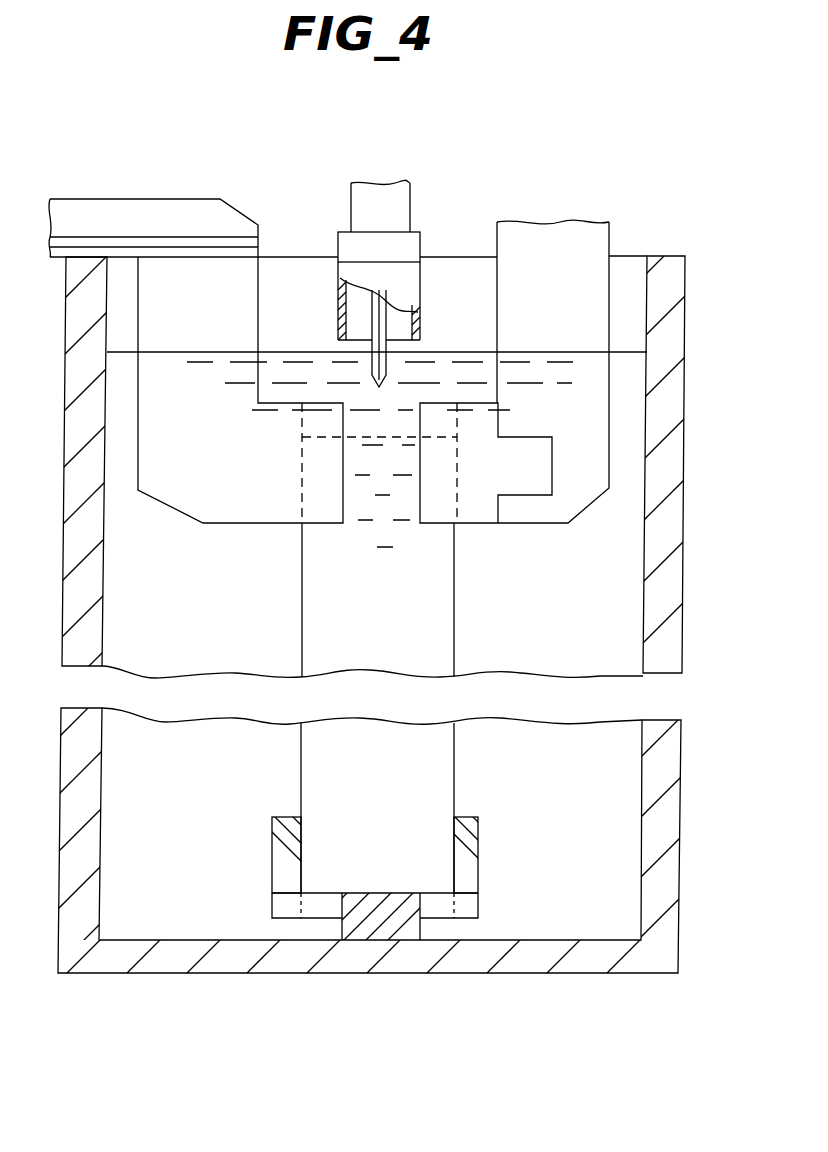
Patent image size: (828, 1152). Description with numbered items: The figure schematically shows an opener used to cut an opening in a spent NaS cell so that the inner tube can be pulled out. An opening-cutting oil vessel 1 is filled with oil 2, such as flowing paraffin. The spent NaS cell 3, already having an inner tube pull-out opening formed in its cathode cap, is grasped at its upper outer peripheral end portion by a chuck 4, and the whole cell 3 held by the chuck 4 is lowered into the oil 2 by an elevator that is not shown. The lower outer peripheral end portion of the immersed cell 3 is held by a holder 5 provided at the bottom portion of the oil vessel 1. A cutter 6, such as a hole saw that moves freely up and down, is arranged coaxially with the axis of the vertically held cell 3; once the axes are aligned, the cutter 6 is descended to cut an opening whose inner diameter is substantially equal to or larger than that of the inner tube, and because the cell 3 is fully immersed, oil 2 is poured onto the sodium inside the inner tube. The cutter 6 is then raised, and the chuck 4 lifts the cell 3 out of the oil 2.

The opening-cutting oil vessel 1 is at (673, 350).
The oil 2 is at (580, 604).
The spent NaS cell 3 is at (326, 787).
The chuck 4 is at (587, 247).
The holder 5 is at (272, 870).
The cutter 6 is at (340, 246).